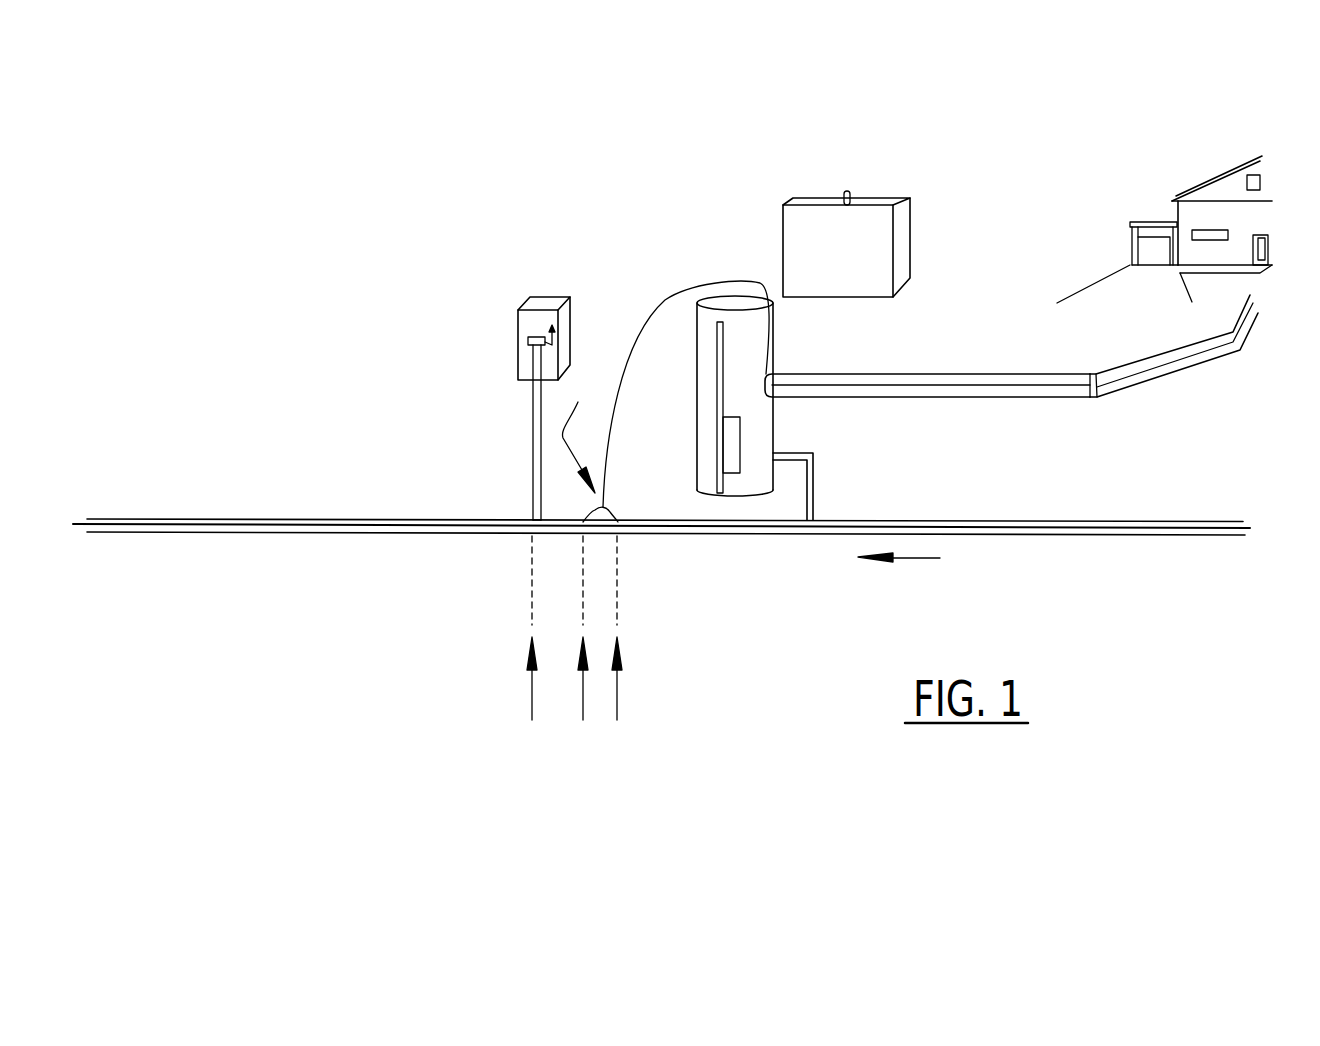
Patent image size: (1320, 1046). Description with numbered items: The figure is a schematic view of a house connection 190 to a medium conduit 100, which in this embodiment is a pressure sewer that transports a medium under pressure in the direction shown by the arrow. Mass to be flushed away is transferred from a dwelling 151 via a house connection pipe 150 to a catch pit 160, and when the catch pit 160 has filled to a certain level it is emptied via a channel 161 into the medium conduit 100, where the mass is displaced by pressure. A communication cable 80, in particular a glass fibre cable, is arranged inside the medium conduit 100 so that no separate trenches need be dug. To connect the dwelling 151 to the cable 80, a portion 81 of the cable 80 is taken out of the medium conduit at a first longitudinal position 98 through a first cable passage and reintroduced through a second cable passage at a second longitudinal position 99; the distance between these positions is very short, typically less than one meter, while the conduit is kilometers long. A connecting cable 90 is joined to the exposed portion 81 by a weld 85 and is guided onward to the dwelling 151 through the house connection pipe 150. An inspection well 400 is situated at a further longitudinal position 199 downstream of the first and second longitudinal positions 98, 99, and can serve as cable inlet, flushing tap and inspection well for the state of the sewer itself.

The medium conduit 100 is at (350, 533).
The inspection well 400 is at (520, 327).
The communication cable 80 is at (556, 527).
The weld 85 is at (579, 432).
The portion of cable 81 is at (610, 512).
The catch pit 160 is at (712, 333).
The connecting cable 90 is at (892, 385).
The channel 161 is at (813, 487).
The house connection pipe 150 is at (977, 420).
The dwelling 151 is at (1137, 238).
The house connection 190 is at (692, 630).
The further longitudinal position 199 is at (528, 649).
The second longitudinal position 99 is at (581, 649).
The first longitudinal position 98 is at (620, 649).